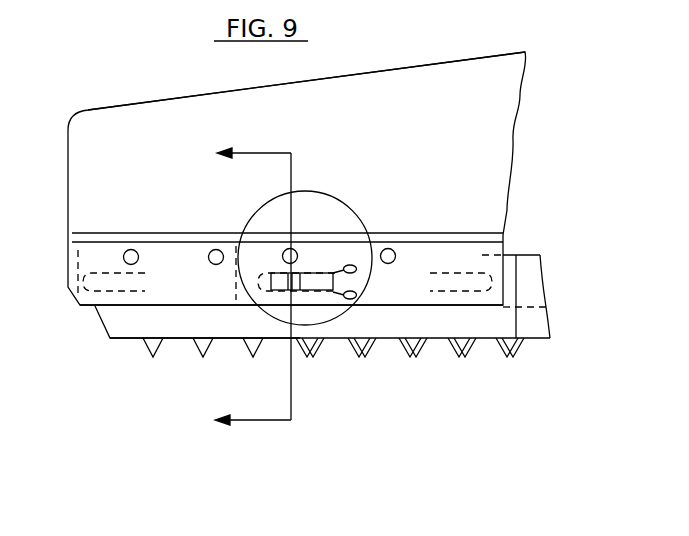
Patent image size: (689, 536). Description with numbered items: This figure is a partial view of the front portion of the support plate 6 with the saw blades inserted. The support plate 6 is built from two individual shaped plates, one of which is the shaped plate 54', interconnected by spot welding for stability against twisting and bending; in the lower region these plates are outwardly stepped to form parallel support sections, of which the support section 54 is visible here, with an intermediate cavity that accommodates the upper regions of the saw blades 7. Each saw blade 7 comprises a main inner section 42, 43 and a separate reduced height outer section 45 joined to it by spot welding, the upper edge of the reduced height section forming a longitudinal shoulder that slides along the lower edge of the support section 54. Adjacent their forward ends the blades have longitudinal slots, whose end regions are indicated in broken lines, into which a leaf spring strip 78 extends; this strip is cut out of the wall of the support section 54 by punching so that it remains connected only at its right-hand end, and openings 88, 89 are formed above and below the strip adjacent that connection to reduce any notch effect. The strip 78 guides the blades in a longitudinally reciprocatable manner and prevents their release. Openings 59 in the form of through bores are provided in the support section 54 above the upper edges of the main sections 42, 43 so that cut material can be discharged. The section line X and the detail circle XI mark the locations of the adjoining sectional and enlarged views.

The support plate 6 is at (85, 108).
The shaped plate 54' is at (306, 86).
The saw blade 7 is at (93, 318).
The opening 59 is at (128, 265).
The support section 54 is at (291, 350).
The reduced height outer section 45 is at (223, 317).
The leaf spring strip 78 is at (302, 284).
The opening 88 is at (357, 270).
The opening 89 is at (350, 299).
The main inner section 43 is at (508, 297).
The main inner section 42 is at (530, 300).
The section line X- X is at (244, 288).
The detail circle XI is at (355, 203).